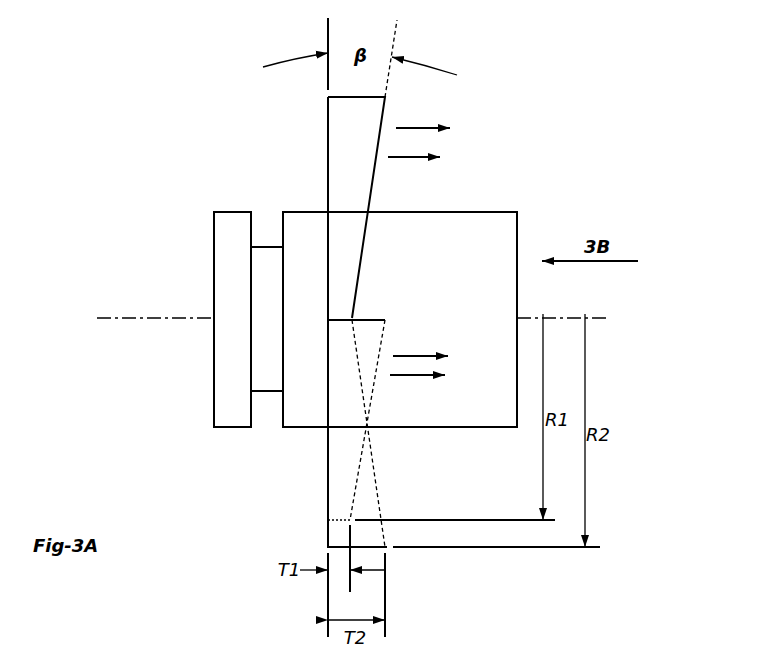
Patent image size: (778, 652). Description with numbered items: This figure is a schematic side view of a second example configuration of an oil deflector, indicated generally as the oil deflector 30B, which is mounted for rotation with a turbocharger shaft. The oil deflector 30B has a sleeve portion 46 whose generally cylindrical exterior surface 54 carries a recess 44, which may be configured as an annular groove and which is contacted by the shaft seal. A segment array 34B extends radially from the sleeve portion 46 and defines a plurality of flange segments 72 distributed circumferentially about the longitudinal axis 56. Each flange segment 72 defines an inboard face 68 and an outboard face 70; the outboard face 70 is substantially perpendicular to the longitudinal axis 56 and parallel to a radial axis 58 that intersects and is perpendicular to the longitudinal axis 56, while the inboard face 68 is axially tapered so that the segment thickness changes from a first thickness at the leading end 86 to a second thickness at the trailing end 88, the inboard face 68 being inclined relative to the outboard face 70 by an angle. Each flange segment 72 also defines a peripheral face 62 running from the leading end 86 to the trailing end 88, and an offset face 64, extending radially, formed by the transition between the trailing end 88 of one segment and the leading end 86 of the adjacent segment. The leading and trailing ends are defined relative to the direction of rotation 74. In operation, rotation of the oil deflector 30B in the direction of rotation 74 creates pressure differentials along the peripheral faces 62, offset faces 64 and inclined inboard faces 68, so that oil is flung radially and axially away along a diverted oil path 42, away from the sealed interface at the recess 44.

The oil deflector 30B is at (617, 72).
The segment array 34B is at (258, 108).
The diverted oil path 42 is at (414, 127).
The recess 44 is at (252, 417).
The sleeve portion 46 is at (214, 225).
The exterior surface 54 is at (505, 233).
The longitudinal axis 56 is at (102, 322).
The radial axis 58 is at (328, 33).
The peripheral face 62 is at (350, 257).
The offset face 64 is at (335, 321).
The inboard face 68 is at (365, 235).
The outboard face 70 is at (328, 375).
The flange segment 72 is at (310, 145).
The direction of rotation 74 is at (128, 348).
The leading end 86 is at (358, 317).
The trailing end 88 is at (418, 96).